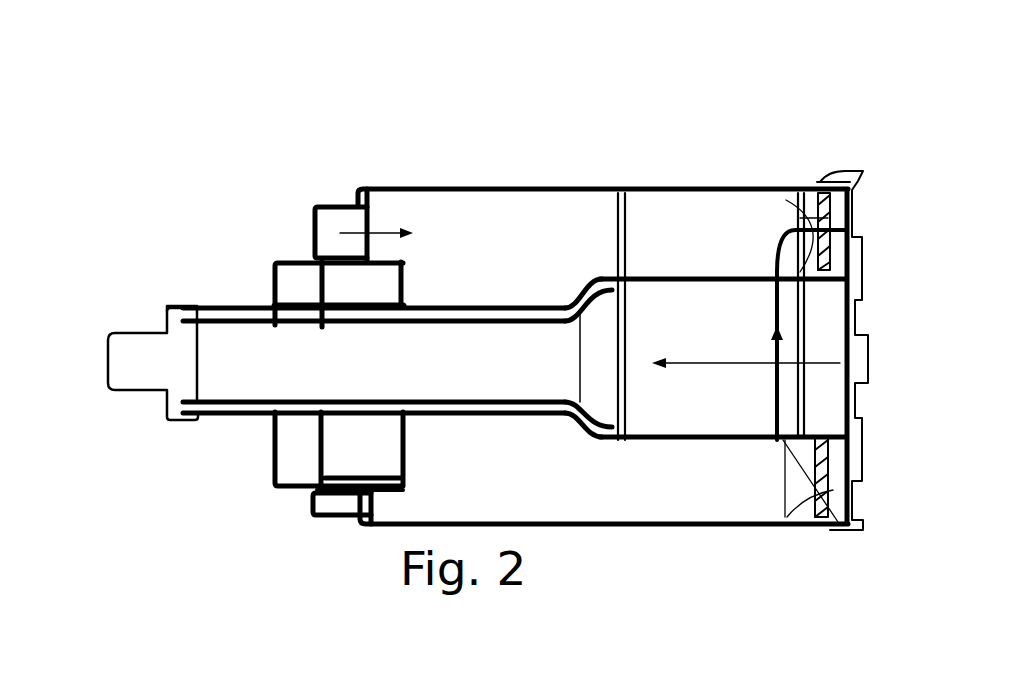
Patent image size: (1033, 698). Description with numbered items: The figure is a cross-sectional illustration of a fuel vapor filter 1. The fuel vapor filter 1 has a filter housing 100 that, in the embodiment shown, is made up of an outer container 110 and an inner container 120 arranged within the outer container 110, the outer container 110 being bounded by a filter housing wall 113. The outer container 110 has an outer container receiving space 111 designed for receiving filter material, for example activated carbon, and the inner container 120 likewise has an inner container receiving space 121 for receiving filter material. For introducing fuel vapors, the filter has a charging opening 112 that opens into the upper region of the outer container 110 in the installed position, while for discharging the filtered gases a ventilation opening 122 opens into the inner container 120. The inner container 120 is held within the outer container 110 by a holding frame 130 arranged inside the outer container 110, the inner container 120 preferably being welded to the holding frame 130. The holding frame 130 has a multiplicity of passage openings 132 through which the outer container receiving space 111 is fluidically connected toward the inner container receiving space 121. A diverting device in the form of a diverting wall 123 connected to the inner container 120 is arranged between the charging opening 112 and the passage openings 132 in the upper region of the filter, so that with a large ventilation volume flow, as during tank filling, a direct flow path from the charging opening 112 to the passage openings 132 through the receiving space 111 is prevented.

The fuel vapor filter 1 is at (828, 121).
The filter housing 100 is at (515, 300).
The outer container 110 is at (482, 189).
The outer container receiving space 111 is at (532, 188).
The charging opening 112 is at (314, 233).
The filter housing wall 113 is at (428, 190).
The inner container 120 is at (676, 268).
The inner container receiving space 121 is at (720, 305).
The ventilation opening 122 is at (105, 362).
The diverting wall 123 is at (588, 280).
The holding frame 130 is at (785, 522).
The passage opening 132 is at (786, 196).